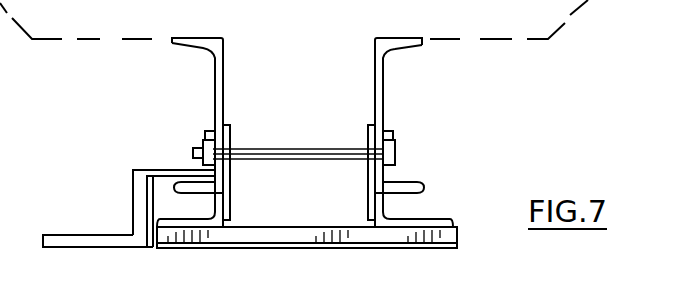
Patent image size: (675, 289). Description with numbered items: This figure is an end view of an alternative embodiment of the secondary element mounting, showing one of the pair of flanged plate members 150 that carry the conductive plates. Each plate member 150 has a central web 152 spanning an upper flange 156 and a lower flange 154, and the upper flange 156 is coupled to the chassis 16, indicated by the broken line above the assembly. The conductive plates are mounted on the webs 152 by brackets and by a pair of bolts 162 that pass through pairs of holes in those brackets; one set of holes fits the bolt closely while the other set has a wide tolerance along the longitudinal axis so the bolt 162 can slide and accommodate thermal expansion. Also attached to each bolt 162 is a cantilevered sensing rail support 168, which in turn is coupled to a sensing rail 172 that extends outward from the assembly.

The chassis 16 is at (588, 0).
The flanged plate member 150 is at (214, 64).
The central web 152 is at (224, 93).
The lower flange 154 is at (425, 197).
The upper flange 156 is at (414, 66).
The bolt 162 is at (394, 143).
The cantilevered sensing rail support 168 is at (163, 170).
The sensing rail 172 is at (70, 234).